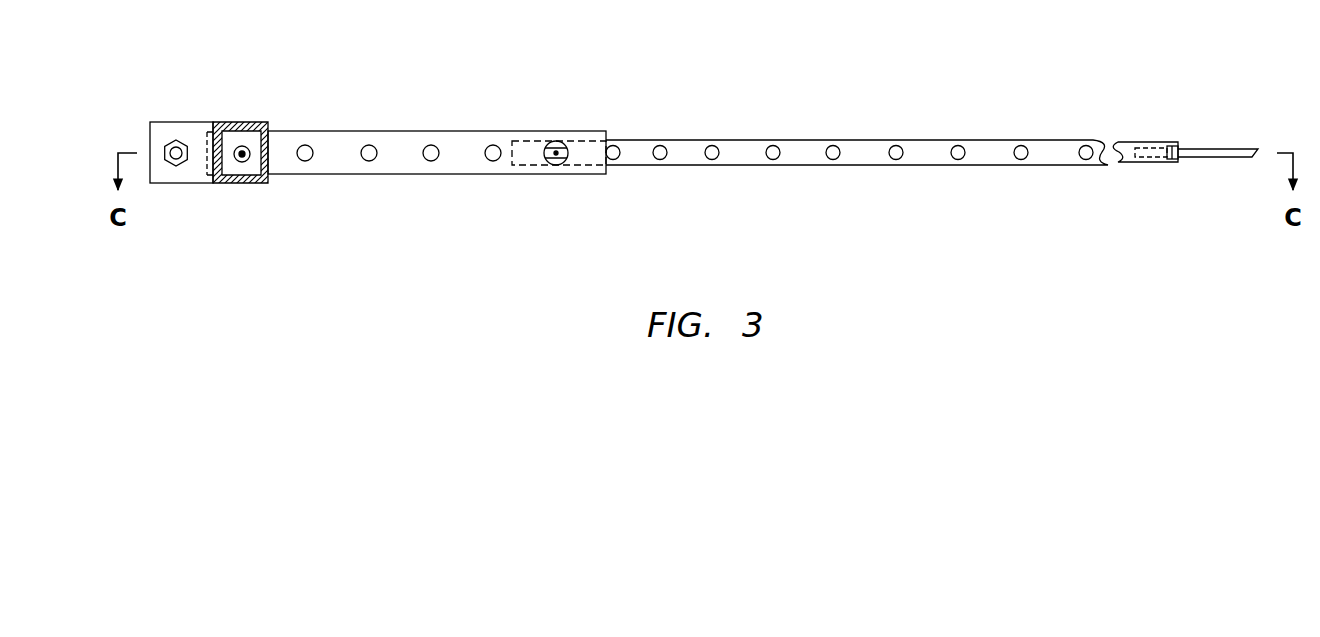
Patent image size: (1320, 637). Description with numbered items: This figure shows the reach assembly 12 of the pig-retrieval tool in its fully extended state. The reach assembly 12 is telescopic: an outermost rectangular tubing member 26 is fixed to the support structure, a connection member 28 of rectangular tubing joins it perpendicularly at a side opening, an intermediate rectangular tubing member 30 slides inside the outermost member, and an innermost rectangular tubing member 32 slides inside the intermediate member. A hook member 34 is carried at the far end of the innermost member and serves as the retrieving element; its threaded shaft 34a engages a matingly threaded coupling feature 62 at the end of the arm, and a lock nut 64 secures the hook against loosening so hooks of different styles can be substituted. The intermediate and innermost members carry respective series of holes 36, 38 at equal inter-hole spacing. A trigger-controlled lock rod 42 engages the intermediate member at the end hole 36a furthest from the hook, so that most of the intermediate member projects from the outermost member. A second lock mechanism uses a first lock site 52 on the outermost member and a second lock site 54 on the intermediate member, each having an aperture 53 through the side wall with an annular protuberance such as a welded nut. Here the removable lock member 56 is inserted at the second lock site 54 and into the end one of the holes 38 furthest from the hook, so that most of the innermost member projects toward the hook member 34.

The reach assembly 12 is at (587, 103).
The outermost rectangular tubing member 26 is at (157, 122).
The connection member 28 is at (234, 183).
The intermediate rectangular tubing member 30 is at (462, 140).
The innermost rectangular tubing member 32 is at (743, 147).
The hook member 34 is at (1232, 148).
The threaded shaft 34a is at (1143, 147).
The series of holes 36 is at (378, 148).
The end hole 36a is at (243, 148).
The series of holes 38 is at (667, 147).
The lock rod 42 is at (246, 159).
The first lock site 52 is at (186, 137).
The aperture 53 is at (180, 166).
The second lock site 54 is at (562, 137).
The removable lock member 56 is at (562, 165).
The threaded coupling feature 62 is at (1141, 172).
The lock nut 64 is at (1173, 162).